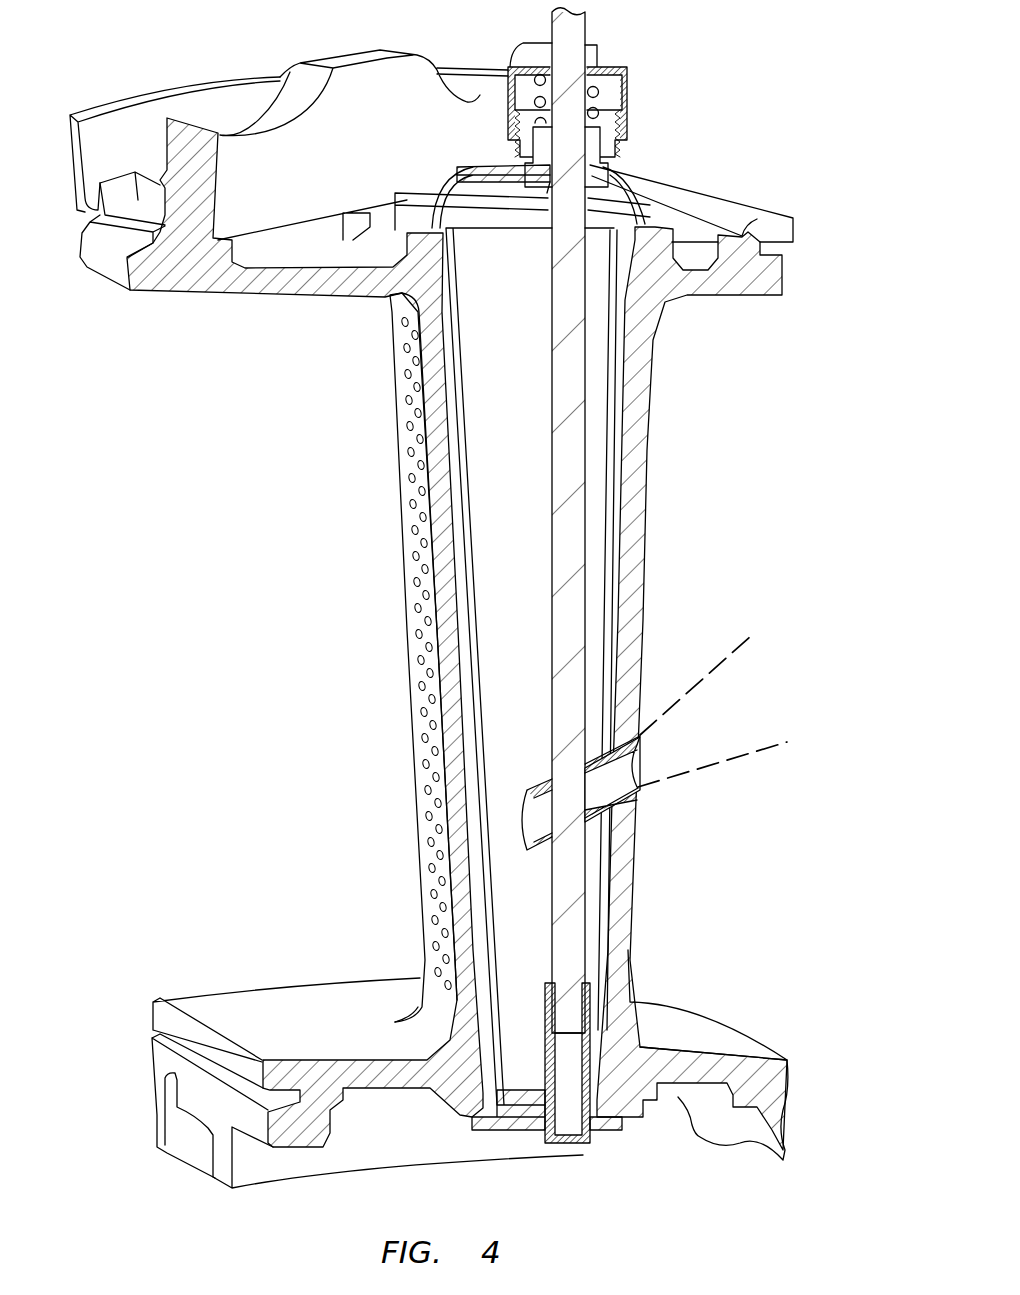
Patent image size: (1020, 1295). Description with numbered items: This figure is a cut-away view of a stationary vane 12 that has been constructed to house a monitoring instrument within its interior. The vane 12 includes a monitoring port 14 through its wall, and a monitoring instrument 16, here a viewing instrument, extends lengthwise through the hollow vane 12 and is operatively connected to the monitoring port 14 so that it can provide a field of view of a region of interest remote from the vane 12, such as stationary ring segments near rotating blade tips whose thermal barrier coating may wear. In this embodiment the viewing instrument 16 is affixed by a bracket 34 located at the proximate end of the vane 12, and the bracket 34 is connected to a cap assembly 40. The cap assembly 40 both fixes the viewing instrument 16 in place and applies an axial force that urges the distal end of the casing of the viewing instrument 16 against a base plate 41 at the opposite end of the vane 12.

The vane 12 is at (405, 644).
The monitoring port 14 is at (613, 800).
The monitoring instrument 16 is at (588, 527).
The bracket 34 is at (648, 203).
The cap assembly 40 is at (648, 76).
The base plate 41 is at (520, 1113).